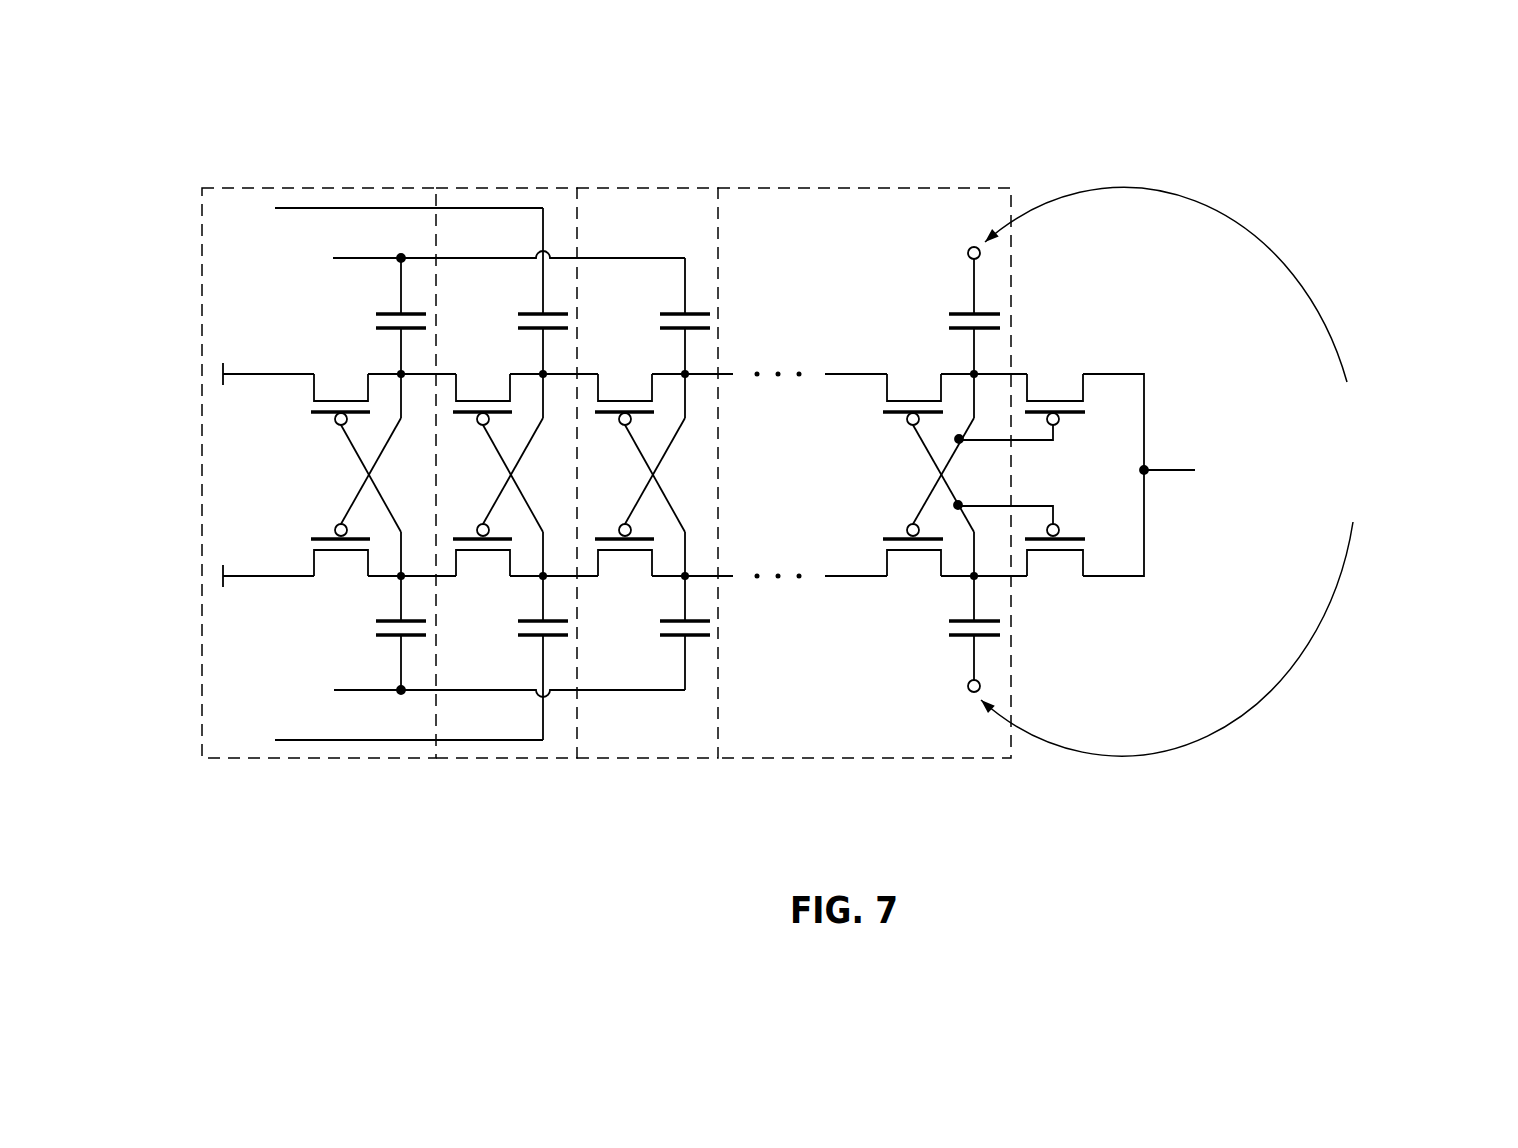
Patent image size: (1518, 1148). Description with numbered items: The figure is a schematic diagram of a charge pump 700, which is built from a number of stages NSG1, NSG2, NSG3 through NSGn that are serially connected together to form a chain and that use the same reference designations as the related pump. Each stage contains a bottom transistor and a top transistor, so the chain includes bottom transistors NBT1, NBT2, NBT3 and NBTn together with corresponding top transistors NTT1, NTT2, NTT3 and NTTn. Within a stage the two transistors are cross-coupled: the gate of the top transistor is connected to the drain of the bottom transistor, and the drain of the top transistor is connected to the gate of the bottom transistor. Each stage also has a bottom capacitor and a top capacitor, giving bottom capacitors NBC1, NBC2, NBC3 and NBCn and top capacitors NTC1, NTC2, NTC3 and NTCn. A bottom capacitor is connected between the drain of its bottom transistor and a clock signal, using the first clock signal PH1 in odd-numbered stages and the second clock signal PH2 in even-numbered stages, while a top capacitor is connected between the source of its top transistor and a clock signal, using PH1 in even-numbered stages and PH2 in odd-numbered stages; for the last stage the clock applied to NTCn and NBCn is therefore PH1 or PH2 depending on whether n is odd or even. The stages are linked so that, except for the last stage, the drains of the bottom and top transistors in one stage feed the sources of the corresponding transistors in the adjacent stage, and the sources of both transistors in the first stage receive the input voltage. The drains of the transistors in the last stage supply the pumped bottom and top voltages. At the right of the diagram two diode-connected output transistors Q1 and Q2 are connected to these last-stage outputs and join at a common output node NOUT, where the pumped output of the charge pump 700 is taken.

The charge pump 700 is at (827, 465).
The first stage NSG1 is at (408, 188).
The second stage NSG2 is at (538, 188).
The third stage NSG3 is at (707, 188).
The last stage NSGn is at (985, 186).
The first clock signal PH1 is at (340, 208).
The second clock signal PH2 is at (370, 258).
The top capacitor NTC1 is at (385, 302).
The top capacitor NTC2 is at (527, 302).
The top capacitor NTC3 is at (677, 302).
The top capacitor NTCn is at (958, 302).
The top transistor NTT1 is at (344, 387).
The top transistor NTT2 is at (486, 387).
The top transistor NTT3 is at (627, 387).
The top transistor NTTn is at (917, 387).
The bottom transistor NBT1 is at (345, 565).
The bottom transistor NBT2 is at (487, 565).
The bottom transistor NBT3 is at (629, 565).
The bottom transistor NBTn is at (917, 563).
The bottom capacitor NBC1 is at (383, 647).
The bottom capacitor NBC2 is at (525, 647).
The bottom capacitor NBC3 is at (667, 647).
The bottom capacitor NBCn is at (957, 648).
The output transistor Q1 is at (1060, 565).
The output transistor Q2 is at (1060, 385).
The output node NOUT is at (1176, 475).